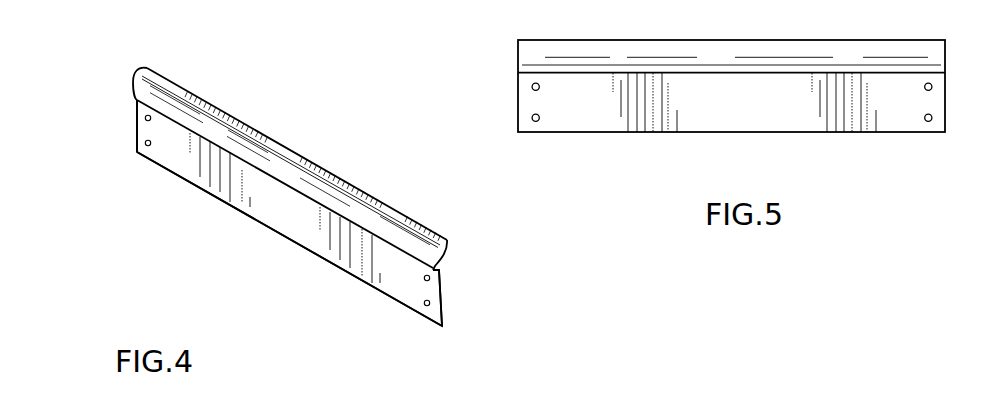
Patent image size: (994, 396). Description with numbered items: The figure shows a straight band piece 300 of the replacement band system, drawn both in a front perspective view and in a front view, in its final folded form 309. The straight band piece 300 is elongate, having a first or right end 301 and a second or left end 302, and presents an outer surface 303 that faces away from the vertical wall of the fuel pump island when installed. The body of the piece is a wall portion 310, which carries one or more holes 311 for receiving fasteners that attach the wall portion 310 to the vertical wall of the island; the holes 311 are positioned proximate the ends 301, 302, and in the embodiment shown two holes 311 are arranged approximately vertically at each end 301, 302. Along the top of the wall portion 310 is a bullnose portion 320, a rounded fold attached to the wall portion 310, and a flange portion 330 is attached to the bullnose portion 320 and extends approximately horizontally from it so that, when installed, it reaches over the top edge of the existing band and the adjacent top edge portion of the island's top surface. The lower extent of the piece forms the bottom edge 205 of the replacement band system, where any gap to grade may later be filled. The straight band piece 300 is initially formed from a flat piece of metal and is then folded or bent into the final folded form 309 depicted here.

In FIG. 4, the straight band piece 300 is at (235, 178).
In FIG. 5, the straight band piece 300 is at (735, 115).
In FIG. 4, the first end 301 is at (442, 326).
In FIG. 4, the second end 302 is at (128, 143).
In FIG. 4, the outer surface 303 is at (183, 153).
In FIG. 4, the final folded form 309 is at (205, 68).
In FIG. 4, the wall portion 310 is at (282, 205).
In FIG. 4, the holes 311 is at (143, 113).
In FIG. 4, the bullnose portion 320 is at (283, 167).
In FIG. 4, the flange portion 330 is at (402, 218).
In FIG. 4, the bottom edge 205 is at (332, 262).